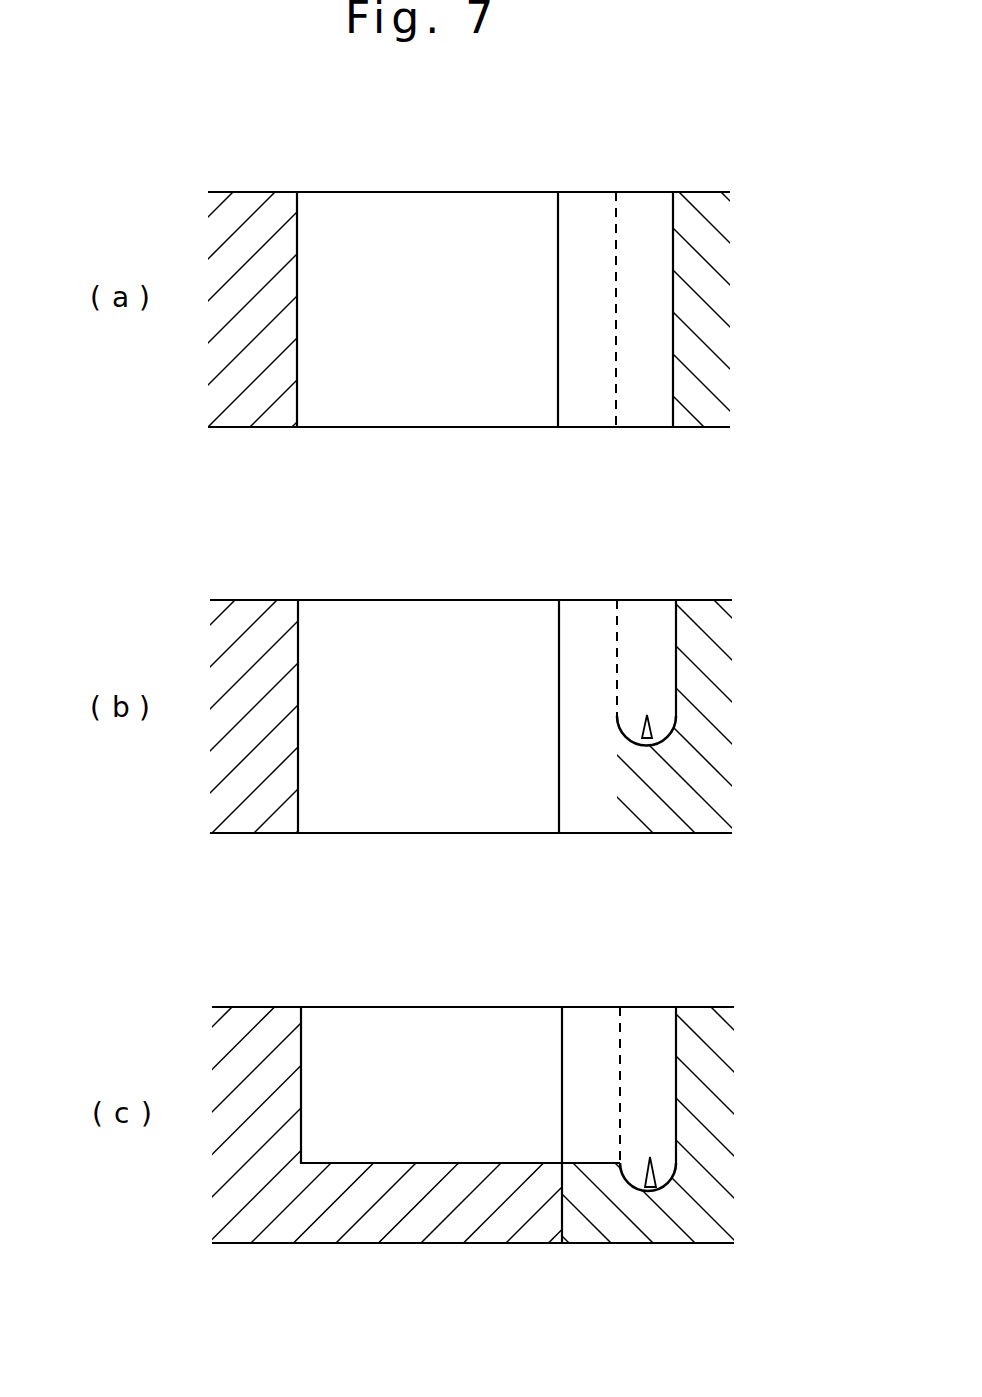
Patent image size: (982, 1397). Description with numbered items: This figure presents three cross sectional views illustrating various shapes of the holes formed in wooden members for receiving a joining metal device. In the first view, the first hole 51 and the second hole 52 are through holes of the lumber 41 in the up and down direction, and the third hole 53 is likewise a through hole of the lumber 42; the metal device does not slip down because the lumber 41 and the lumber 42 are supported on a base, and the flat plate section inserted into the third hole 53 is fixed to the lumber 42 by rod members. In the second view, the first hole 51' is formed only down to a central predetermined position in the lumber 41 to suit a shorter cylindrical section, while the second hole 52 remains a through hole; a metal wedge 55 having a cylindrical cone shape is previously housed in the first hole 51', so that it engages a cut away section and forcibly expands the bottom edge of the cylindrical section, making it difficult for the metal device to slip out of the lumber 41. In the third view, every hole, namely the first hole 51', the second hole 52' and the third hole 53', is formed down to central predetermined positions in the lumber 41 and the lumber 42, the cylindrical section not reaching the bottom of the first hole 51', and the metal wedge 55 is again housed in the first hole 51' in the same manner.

The lumber 41 is at (699, 201).
The lumber 42 is at (256, 201).
The first hole 51 is at (638, 266).
The first hole 51' is at (645, 839).
The second hole 52 is at (582, 469).
The second hole 52' is at (588, 1081).
The third hole 53 is at (470, 469).
The third hole 53' is at (473, 1081).
The metal wedge 55 is at (650, 737).